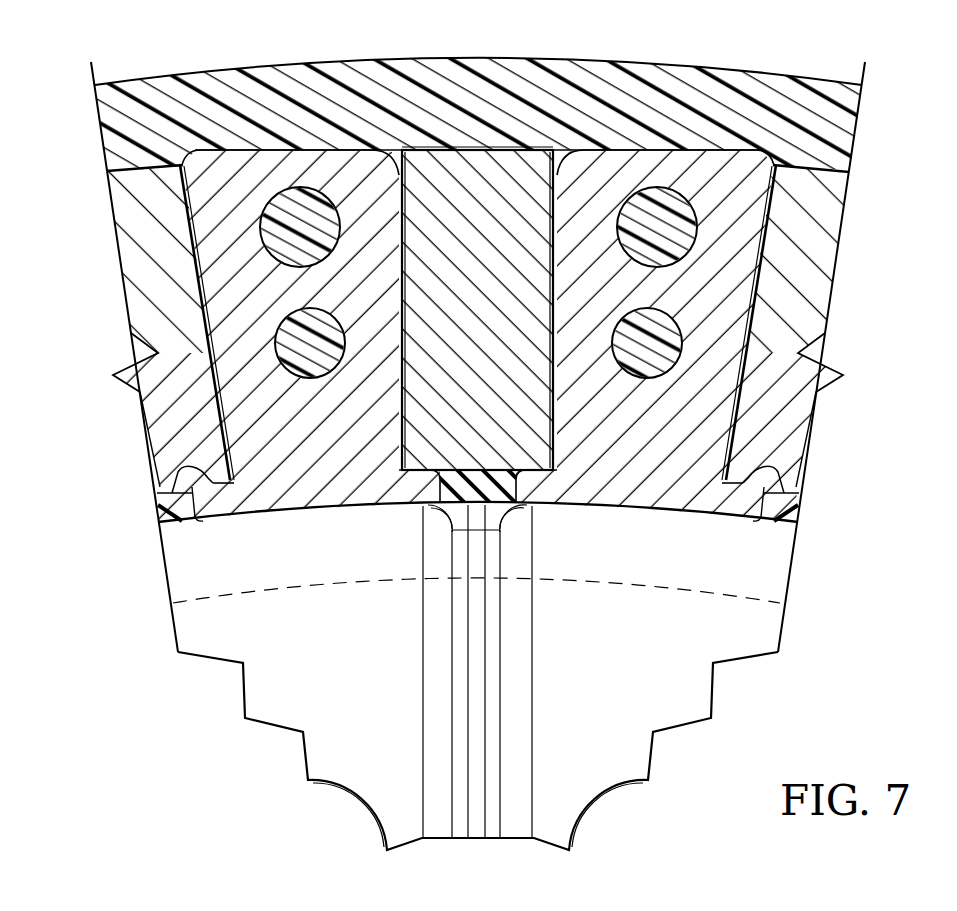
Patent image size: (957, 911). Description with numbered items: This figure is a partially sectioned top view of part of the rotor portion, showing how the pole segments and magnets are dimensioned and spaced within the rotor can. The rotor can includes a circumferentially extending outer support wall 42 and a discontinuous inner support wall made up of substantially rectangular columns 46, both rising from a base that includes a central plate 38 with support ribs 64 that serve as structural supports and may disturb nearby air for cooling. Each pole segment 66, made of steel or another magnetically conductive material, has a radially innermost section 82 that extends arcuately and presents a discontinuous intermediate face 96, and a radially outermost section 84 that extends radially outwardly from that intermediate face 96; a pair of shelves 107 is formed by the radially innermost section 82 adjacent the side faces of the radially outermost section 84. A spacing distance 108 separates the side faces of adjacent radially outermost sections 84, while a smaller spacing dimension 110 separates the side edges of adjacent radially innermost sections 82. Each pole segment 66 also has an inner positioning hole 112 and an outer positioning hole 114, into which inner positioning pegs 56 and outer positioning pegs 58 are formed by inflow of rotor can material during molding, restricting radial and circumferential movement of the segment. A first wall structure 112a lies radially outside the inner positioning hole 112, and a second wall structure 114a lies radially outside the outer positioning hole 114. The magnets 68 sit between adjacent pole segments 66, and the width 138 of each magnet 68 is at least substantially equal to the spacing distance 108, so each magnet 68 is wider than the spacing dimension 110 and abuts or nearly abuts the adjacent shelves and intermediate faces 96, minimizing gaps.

The central plate 38 is at (568, 770).
The outer support wall 42 is at (713, 103).
The columns 46 is at (170, 505).
The inner positioning pegs 56 is at (302, 340).
The outer positioning pegs 58 is at (283, 171).
The support ribs 64 is at (483, 697).
The pole segment 66 is at (295, 412).
The magnets 68 is at (480, 232).
The radially innermost section 82 is at (277, 488).
The radially outermost section 84 is at (362, 232).
The intermediate face 96 is at (417, 460).
The shelves 107 is at (190, 467).
The spacing distance 108 is at (405, 378).
The spacing dimension 110 is at (442, 484).
The inner positioning hole 112 is at (262, 360).
The first wall structure 112a is at (290, 295).
The outer positioning hole 114 is at (255, 243).
The second wall structure 114a is at (182, 165).
The width 138 is at (405, 290).